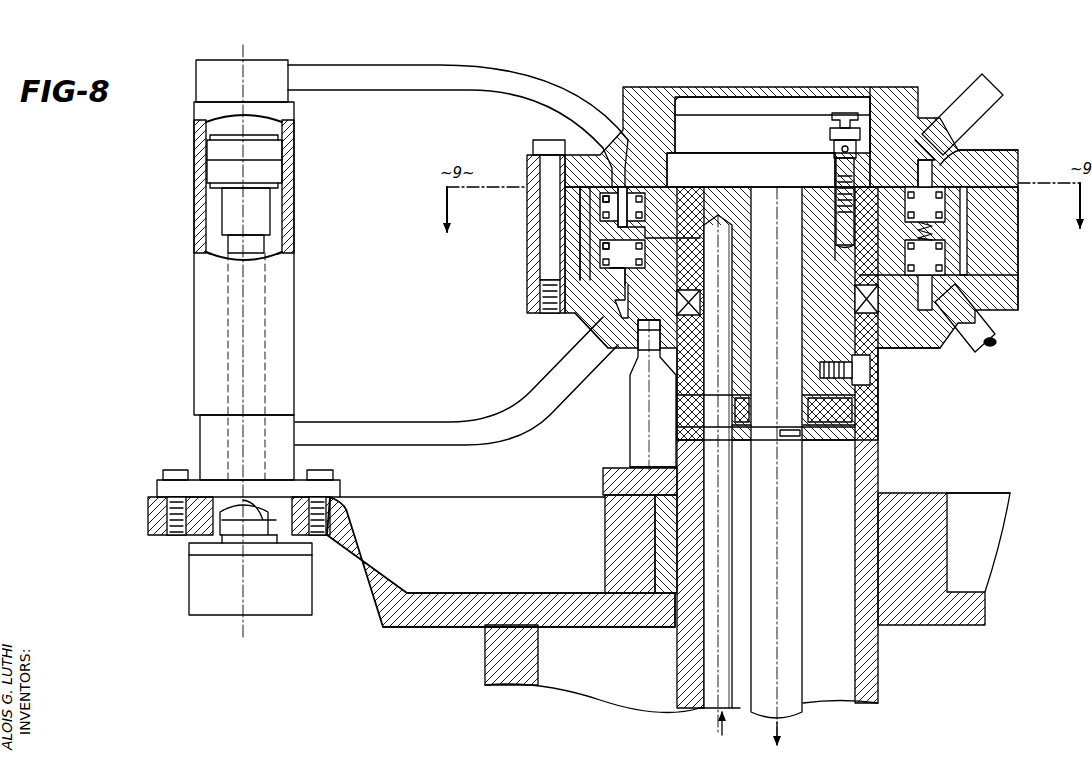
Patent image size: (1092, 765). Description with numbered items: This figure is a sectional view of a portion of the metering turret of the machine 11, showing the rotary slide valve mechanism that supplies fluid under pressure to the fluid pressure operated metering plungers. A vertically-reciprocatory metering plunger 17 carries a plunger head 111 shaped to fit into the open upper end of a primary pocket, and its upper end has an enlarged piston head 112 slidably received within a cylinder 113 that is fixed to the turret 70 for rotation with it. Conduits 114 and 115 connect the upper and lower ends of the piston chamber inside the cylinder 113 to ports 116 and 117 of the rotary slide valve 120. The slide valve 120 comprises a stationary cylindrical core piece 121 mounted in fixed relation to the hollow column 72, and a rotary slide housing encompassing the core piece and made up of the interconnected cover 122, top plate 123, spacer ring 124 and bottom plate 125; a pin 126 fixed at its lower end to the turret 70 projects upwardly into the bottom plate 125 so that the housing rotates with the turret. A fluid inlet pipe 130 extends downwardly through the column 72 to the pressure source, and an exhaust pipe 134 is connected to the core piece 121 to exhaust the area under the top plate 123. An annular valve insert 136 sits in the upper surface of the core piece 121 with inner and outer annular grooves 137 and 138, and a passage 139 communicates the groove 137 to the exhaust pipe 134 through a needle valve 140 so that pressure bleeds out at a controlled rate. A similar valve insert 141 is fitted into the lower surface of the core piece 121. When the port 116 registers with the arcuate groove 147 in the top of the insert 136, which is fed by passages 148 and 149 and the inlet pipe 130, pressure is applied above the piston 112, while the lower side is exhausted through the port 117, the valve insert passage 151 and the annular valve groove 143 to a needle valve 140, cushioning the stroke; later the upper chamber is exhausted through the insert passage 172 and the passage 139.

The rotary table 11 is at (950, 455).
The metering plunger 17 is at (185, 563).
The turret 70 is at (983, 492).
The hollow column 72 is at (882, 688).
The plunger head 111 is at (197, 599).
The piston head 112 is at (213, 165).
The cylinder 113 is at (200, 303).
The conduit 114 is at (390, 84).
The conduit 115 is at (402, 424).
The port 116 is at (617, 142).
The port 117 is at (600, 312).
The rotary slide valve 120 is at (522, 281).
The core piece 121 is at (805, 200).
The cover 122 is at (850, 78).
The top plate 123 is at (968, 150).
The spacer ring 124 is at (1013, 250).
The bottom plate 125 is at (896, 344).
The pin 126 is at (636, 410).
The fluid inlet pipe 130 is at (727, 320).
The exhaust pipe 134 is at (800, 498).
The valve insert 136 is at (595, 200).
The inner annular groove 137 is at (912, 188).
The outer annular groove 138 is at (920, 200).
The passage 139 is at (890, 195).
The needle valve 140 is at (830, 148).
The valve insert 141 is at (575, 310).
The outer annular groove 143 is at (565, 265).
The arcuate groove 147 is at (640, 192).
The passage 148 is at (628, 210).
The passage 149 is at (672, 232).
The valve insert passage 151 is at (585, 250).
The insert passage 172 is at (992, 165).